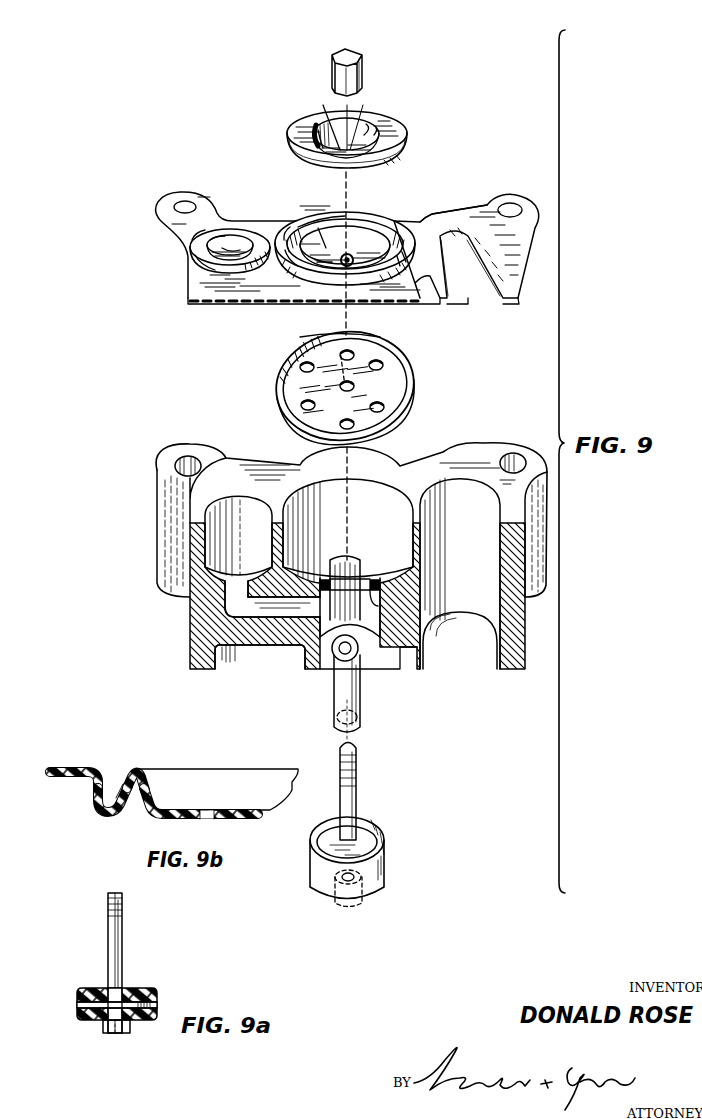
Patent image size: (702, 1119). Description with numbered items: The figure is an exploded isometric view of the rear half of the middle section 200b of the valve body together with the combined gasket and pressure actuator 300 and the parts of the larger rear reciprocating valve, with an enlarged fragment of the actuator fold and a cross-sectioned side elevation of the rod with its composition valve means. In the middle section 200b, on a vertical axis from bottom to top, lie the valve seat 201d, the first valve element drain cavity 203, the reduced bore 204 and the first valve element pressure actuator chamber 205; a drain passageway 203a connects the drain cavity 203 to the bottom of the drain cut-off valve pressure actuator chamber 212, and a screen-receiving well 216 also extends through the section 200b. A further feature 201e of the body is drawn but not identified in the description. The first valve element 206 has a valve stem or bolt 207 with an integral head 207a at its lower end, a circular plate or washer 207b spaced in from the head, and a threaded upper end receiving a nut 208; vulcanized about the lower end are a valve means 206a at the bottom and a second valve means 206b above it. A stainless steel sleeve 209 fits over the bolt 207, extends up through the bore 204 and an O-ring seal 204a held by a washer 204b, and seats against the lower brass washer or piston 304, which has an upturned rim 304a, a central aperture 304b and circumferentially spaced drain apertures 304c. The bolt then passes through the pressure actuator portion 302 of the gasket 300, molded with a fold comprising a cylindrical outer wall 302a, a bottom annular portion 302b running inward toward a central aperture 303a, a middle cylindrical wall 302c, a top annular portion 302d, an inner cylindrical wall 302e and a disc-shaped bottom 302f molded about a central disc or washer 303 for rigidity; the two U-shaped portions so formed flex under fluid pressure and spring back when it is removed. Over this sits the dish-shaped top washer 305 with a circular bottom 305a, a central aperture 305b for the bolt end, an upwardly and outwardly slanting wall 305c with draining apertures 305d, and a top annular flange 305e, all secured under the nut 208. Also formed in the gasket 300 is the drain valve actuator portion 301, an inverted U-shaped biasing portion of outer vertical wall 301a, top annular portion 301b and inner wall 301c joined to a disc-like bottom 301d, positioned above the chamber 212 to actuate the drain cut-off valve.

In FIG. 9, the first valve element 206 is at (357, 45).
In FIG. 9, the nut 208 is at (333, 70).
In FIG. 9, the top washer 305 is at (416, 131).
In FIG. 9, the circular bottom 305a is at (322, 120).
In FIG. 9, the central aperture 305b is at (366, 120).
In FIG. 9, the slanting vertical wall 305c is at (368, 133).
In FIG. 9, the draining apertures 305d is at (314, 125).
In FIG. 9, the top annular flange 305e is at (314, 131).
In FIG. 9, the combined gasket and pressure actuator 300 is at (178, 285).
In FIG. 9, the drain valve actuator portion 301 is at (230, 240).
In FIG. 9, the outer vertical wall 301a is at (196, 257).
In FIG. 9, the top annular portion 301b is at (193, 243).
In FIG. 9, the vertical inner wall 301c is at (222, 240).
In FIG. 9, the disc-like bottom 301d is at (232, 247).
In FIG. 9, the pressure actuator portion 302 is at (366, 232).
In FIG. 9, the cylindrical vertical outer wall 302a is at (433, 211).
In FIG. 9b, the cylindrical vertical outer wall 302a is at (92, 787).
In FIG. 9, the bottom annular portion 302b is at (406, 259).
In FIG. 9b, the bottom annular portion 302b is at (105, 816).
In FIG. 9, the middle cylindrical wall 302c is at (300, 267).
In FIG. 9b, the middle cylindrical wall 302c is at (118, 788).
In FIG. 9, the top annular portion 302d is at (288, 256).
In FIG. 9b, the top annular portion 302d is at (136, 772).
In FIG. 9, the inner cylindrical wall 302e is at (320, 232).
In FIG. 9b, the inner cylindrical wall 302e is at (148, 791).
In FIG. 9, the bottom 302f is at (338, 232).
In FIG. 9b, the bottom 302f is at (166, 820).
In FIG. 9, the central disc or washer 303 is at (327, 264).
In FIG. 9b, the central disc or washer 303 is at (214, 809).
In FIG. 9, the central aperture 303a is at (347, 266).
In FIG. 9b, the central aperture 303a is at (208, 821).
In FIG. 9, the lower washer or piston 304 is at (407, 392).
In FIG. 9, the upturned rim 304a is at (395, 351).
In FIG. 9, the central aperture 304b is at (348, 390).
In FIG. 9, the drain apertures 304c is at (303, 405).
In FIG. 9, the middle section 200b is at (155, 524).
In FIG. 9, the drain cut-off valve pressure actuator chamber 212 is at (231, 512).
In FIG. 9, the first valve element pressure actuator chamber 205 is at (368, 470).
In FIG. 9, the screen-receiving cavity or well 216 is at (468, 492).
In FIG. 9, the reduced bore 204 is at (347, 558).
In FIG. 9, the O-ring seal 204a is at (381, 586).
In FIG. 9, the washer 204b is at (380, 606).
In FIG. 9, the first valve element drain cavity 203 is at (328, 605).
In FIG. 9, the drain passageway 203a is at (230, 611).
In FIG. 9, the bottom recess 201e is at (252, 653).
In FIG. 9, the valve seat 201d is at (332, 656).
In FIG. 9, the sleeve 209 is at (360, 702).
In FIG. 9, the valve stem or bolt 207 is at (358, 786).
In FIG. 9a, the valve stem or bolt 207 is at (118, 931).
In FIG. 9, the second valve means 206b is at (386, 850).
In FIG. 9a, the second valve means 206b is at (150, 990).
In FIG. 9, the integral head 207a is at (347, 906).
In FIG. 9a, the integral head 207a is at (112, 1036).
In FIG. 9a, the circular plate or washer 207b is at (77, 1008).
In FIG. 9a, the valve means 206a is at (79, 1019).